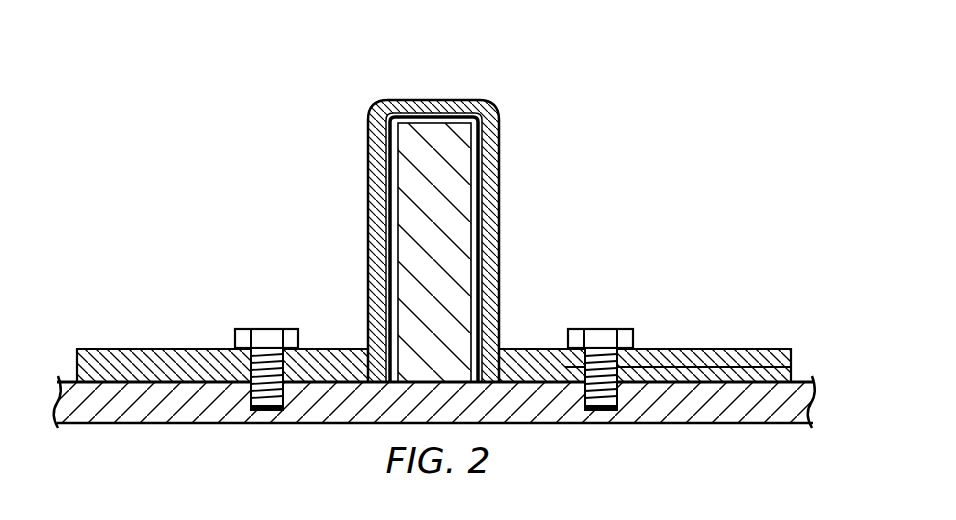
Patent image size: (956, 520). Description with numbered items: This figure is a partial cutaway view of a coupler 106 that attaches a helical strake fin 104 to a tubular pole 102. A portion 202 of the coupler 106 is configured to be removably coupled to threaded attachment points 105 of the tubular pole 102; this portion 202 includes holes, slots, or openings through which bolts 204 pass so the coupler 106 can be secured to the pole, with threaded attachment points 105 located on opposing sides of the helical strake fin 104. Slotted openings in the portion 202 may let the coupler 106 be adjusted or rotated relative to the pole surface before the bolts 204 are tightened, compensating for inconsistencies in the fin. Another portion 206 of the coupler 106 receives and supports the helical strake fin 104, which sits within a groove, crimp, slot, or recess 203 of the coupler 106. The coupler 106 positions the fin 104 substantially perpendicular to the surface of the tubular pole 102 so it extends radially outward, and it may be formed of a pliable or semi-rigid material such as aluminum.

The tubular pole 102 is at (741, 406).
The helical strake fin 104 is at (417, 181).
The threaded attachment point 105 is at (250, 393).
The coupler 106 is at (543, 168).
The portion of the coupler 202 is at (367, 288).
The recess 203 is at (475, 124).
The bolts 204 is at (258, 328).
The another portion of the coupler 206 is at (365, 90).